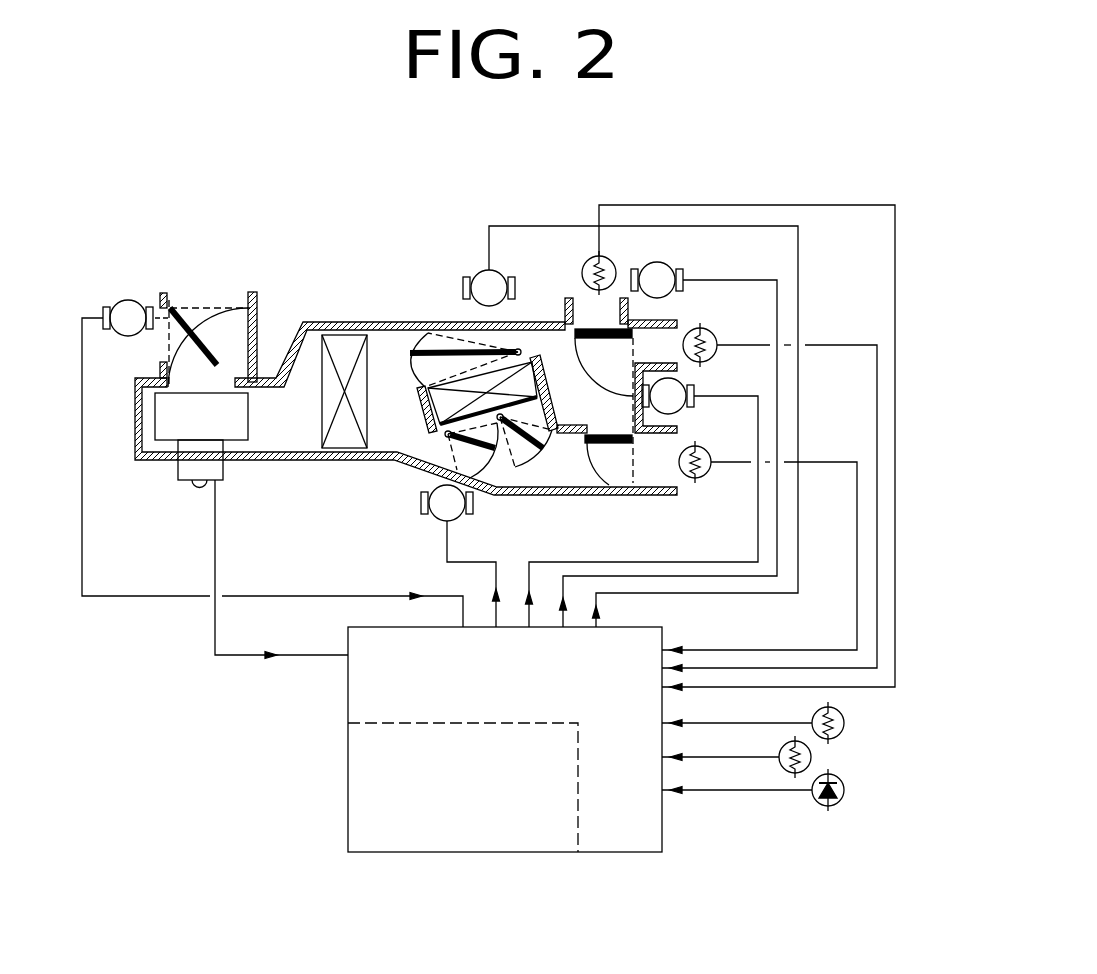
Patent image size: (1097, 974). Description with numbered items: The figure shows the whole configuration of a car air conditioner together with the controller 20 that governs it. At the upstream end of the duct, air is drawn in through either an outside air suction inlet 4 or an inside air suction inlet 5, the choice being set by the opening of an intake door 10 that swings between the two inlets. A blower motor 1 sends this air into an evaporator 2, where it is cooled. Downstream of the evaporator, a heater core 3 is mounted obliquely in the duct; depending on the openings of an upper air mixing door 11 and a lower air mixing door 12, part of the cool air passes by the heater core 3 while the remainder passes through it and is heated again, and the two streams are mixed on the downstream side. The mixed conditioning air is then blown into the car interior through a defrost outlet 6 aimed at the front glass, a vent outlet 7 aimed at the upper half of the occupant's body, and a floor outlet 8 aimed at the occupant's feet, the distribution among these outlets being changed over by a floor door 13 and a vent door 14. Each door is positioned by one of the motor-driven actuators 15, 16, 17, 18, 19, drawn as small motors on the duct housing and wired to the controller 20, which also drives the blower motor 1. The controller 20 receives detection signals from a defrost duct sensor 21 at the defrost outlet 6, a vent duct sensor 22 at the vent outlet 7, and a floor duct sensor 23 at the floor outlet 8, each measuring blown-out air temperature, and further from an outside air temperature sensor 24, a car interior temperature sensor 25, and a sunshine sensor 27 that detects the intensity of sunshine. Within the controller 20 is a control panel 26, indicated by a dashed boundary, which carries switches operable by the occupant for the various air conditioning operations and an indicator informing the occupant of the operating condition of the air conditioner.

The blower motor 1 is at (173, 472).
The evaporator 2 is at (320, 408).
The heater core 3 is at (422, 417).
The outside air suction inlet 4 is at (222, 295).
The inside air suction inlet 5 is at (157, 345).
The defrost outlet 6 is at (593, 307).
The vent outlet 7 is at (667, 343).
The floor outlet 8 is at (665, 468).
The intake door 10 is at (197, 327).
The upper air mixing door 11 is at (430, 323).
The lower air mixing door 12 is at (503, 463).
The floor door 13 is at (597, 457).
The vent door 14 is at (577, 327).
The motor-driven actuator 15 is at (125, 296).
The motor-driven actuator 16 is at (475, 273).
The motor-driven actuator 17 is at (435, 522).
The motor-driven actuator 18 is at (683, 417).
The motor-driven actuator 19 is at (670, 262).
The controller 20 is at (650, 855).
The defrost duct sensor 21 is at (612, 260).
The vent duct sensor 22 is at (769, 486).
The floor duct sensor 23 is at (707, 470).
The outside air temperature sensor 24 is at (847, 713).
The car interior temperature sensor 25 is at (815, 756).
The control panel 26 is at (542, 843).
The sunshine sensor 27 is at (847, 792).